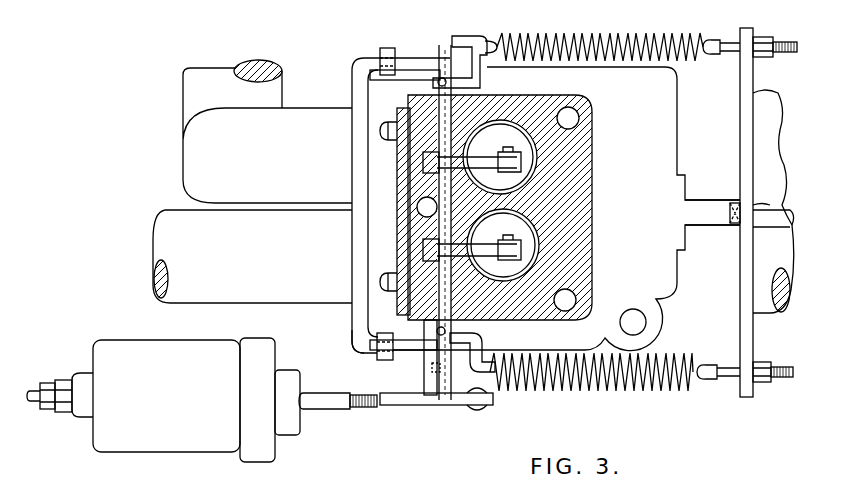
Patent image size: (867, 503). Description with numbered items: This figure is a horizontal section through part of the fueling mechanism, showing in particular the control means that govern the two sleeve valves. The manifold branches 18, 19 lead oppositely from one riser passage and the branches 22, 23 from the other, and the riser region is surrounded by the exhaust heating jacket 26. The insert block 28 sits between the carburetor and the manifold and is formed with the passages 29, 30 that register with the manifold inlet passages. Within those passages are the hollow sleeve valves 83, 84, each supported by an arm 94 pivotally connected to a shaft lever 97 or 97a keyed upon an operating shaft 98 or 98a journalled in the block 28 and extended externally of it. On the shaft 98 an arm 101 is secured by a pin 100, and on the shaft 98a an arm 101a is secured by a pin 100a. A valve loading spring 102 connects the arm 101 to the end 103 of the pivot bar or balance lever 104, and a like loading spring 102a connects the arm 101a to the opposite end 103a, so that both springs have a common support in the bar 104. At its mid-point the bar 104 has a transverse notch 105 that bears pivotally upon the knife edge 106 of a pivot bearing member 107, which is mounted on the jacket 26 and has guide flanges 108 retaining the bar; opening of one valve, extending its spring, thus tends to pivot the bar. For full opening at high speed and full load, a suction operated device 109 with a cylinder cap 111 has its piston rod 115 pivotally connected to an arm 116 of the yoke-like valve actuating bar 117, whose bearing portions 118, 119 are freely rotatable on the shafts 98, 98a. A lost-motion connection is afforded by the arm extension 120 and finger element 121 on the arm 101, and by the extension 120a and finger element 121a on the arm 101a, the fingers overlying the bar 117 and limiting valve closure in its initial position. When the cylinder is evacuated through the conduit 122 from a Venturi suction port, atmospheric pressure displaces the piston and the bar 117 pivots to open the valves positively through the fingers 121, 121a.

The manifold branch 18 is at (250, 295).
The manifold branch 19 is at (694, 308).
The manifold branch 22 is at (200, 176).
The manifold branch 23 is at (770, 182).
The jacket 26 is at (670, 162).
The insert member or block 28 is at (576, 240).
The opening or passage 29 is at (560, 274).
The opening or passage 30 is at (546, 167).
The valve device 83 is at (507, 273).
The control valve 84 is at (506, 182).
The arm 94 is at (522, 237).
The shaft lever 97 is at (479, 253).
The shaft lever 97a is at (476, 165).
The operating shaft 98 is at (428, 300).
The operating shaft 98a is at (452, 106).
The pin 100 is at (446, 331).
The pin 100a is at (438, 83).
The arm 101 is at (483, 346).
The arm 101a is at (500, 68).
The valve loading spring 102 is at (605, 392).
The loading spring 102a is at (594, 33).
The end of pivot bar 103 is at (745, 398).
The end of balance bar 103a is at (750, 36).
The pivot bar or balance lever 104 is at (750, 335).
The transverse notch or groove 105 is at (773, 230).
The knife edge 106 is at (737, 218).
The pivot bearing member 107 is at (700, 208).
The guide flanges 108 is at (755, 206).
The pneumatic or suction operated device 109 is at (190, 452).
The cylinder cap 111 is at (272, 365).
The piston connecting rod structure 115 is at (330, 408).
The arm 116 is at (495, 400).
The valve actuating bar 117 is at (350, 333).
The bearing portion 118 is at (424, 382).
The bearing portion 119 is at (440, 60).
The arm extension 120 is at (410, 350).
The extension 120a is at (407, 77).
The finger element 121 is at (378, 352).
The finger element 121a is at (390, 48).
The conduit 122 is at (45, 380).